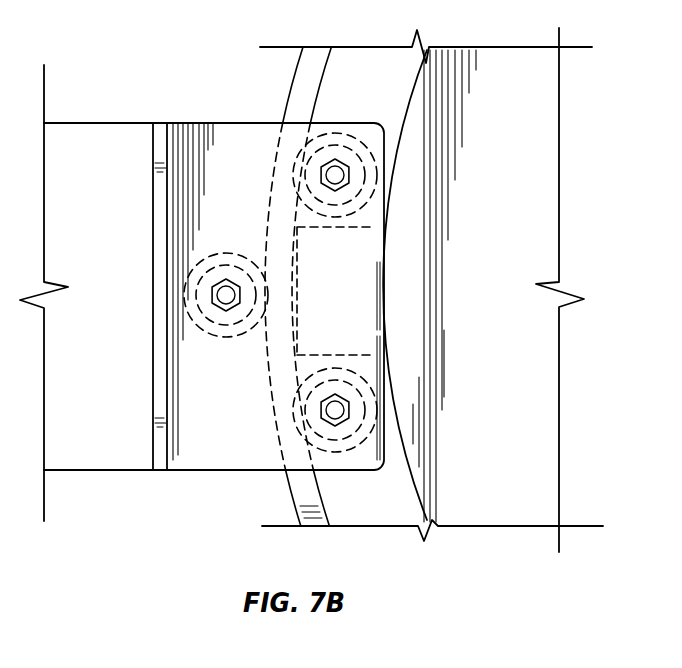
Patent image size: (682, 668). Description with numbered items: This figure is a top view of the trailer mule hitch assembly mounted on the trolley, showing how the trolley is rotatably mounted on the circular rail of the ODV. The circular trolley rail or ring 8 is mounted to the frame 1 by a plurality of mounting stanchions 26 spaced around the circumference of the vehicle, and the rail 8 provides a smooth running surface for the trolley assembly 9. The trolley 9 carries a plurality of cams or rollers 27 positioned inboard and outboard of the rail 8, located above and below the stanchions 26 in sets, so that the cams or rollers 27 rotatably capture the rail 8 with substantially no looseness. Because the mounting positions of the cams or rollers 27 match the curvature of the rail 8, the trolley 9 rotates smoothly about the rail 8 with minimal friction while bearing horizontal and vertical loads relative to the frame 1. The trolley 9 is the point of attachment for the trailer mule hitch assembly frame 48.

The frame 1 is at (537, 113).
The circular trolley rail 8 is at (303, 93).
The trolley assembly 9 is at (218, 446).
The mounting stanchion 26 is at (361, 292).
The cam or roller 27 is at (347, 130).
The trailer mule hitch assembly frame 48 is at (88, 455).